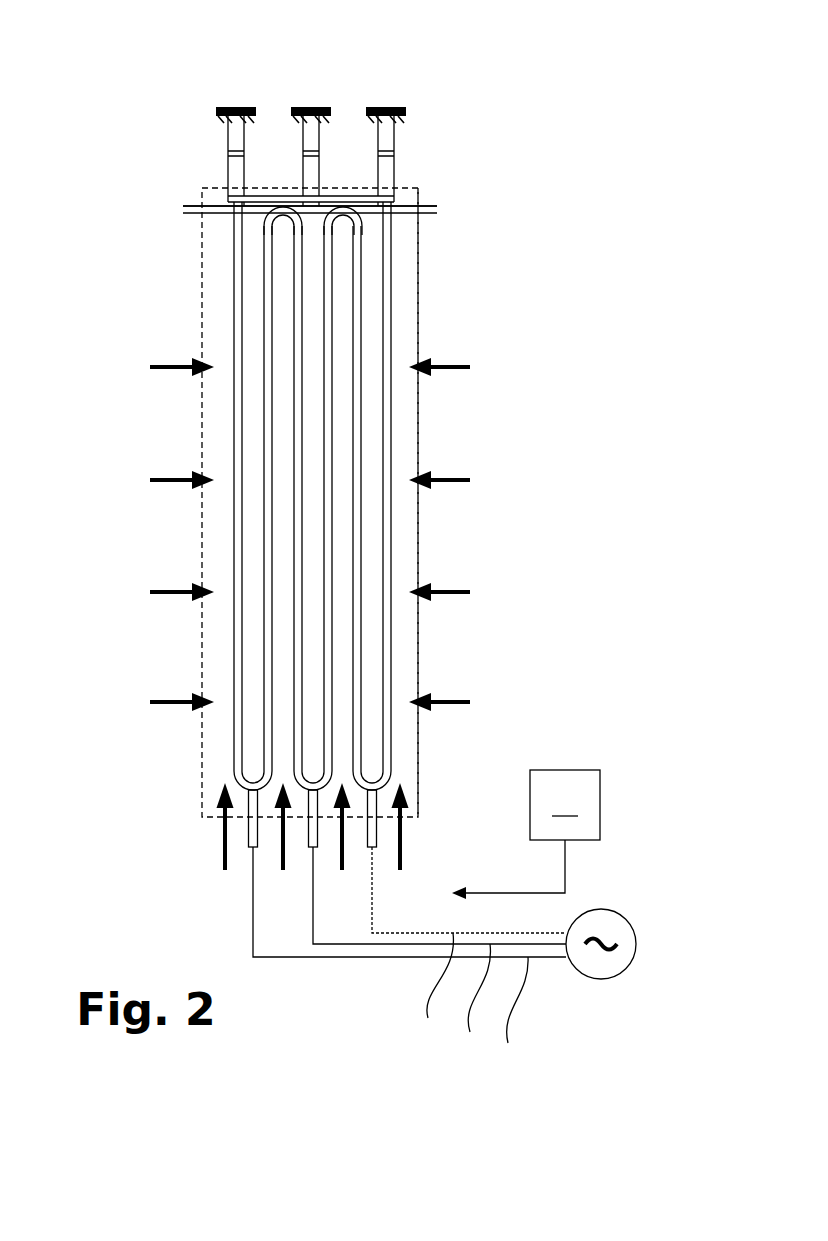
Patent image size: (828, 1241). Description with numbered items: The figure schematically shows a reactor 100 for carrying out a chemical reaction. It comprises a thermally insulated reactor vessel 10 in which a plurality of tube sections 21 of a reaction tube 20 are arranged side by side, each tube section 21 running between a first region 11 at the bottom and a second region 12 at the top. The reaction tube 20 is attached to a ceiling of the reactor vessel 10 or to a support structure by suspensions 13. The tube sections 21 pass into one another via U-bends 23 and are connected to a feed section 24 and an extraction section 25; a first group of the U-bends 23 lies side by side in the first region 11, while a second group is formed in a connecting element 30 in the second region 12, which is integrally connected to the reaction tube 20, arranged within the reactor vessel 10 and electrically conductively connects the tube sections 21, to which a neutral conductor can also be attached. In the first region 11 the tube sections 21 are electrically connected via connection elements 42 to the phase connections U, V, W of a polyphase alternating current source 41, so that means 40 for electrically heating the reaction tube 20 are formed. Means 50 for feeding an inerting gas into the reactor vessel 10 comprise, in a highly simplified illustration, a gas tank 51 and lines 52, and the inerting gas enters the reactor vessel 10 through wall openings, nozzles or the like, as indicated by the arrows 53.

The reactor 100 is at (150, 48).
The reactor vessel 10 is at (202, 570).
The first region 11 is at (410, 772).
The second region 12 is at (412, 237).
The suspension 13 is at (393, 148).
The reaction tube 20 is at (307, 463).
The tube section 21 is at (233, 338).
The U-bend 23 is at (268, 207).
The feed section 24 is at (188, 206).
The extraction section 25 is at (437, 207).
The connecting element 30 is at (398, 197).
The means for electrically heating the reaction tube 40 is at (482, 961).
The polyphase alternating current source 41 is at (637, 953).
The connection element 42 is at (243, 825).
The means for feeding an inerting gas 50 is at (569, 806).
The gas tank 51 is at (565, 805).
The line 52 is at (566, 872).
The arrow 53 is at (173, 698).